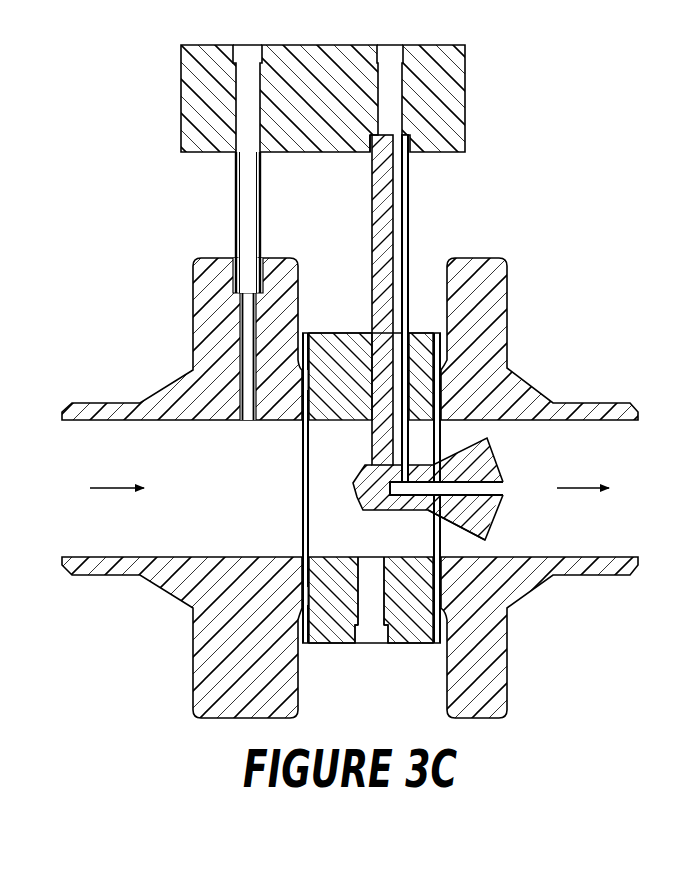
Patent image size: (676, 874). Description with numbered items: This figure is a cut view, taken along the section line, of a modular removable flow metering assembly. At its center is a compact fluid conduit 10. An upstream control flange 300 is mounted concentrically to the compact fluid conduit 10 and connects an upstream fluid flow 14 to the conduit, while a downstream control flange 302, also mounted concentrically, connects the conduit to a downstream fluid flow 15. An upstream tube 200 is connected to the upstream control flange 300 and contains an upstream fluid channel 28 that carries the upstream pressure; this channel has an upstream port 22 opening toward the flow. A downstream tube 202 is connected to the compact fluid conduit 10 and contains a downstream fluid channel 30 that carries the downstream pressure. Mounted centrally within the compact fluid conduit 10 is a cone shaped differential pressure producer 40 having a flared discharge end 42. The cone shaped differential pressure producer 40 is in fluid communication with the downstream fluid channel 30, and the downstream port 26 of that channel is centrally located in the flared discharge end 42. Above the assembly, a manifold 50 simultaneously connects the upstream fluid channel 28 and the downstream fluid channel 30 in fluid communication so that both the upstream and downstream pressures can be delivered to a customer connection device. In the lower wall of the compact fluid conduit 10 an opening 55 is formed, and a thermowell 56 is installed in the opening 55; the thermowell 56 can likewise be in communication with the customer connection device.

The compact fluid conduit 10 is at (404, 645).
The upstream fluid flow 14 is at (115, 487).
The downstream fluid flow 15 is at (585, 487).
The upstream port 22 is at (248, 425).
The downstream port 26 is at (506, 488).
The upstream fluid channel 28 is at (241, 183).
The downstream fluid channel 30 is at (399, 187).
The cone shaped differential pressure producer 40 is at (457, 521).
The flared discharge end 42 is at (503, 509).
The manifold 50 is at (466, 99).
The opening 55 is at (371, 640).
The thermowell 56 is at (383, 563).
The upstream tube 200 is at (234, 213).
The downstream tube 202 is at (409, 216).
The upstream control flange 300 is at (215, 258).
The downstream control flange 302 is at (478, 258).